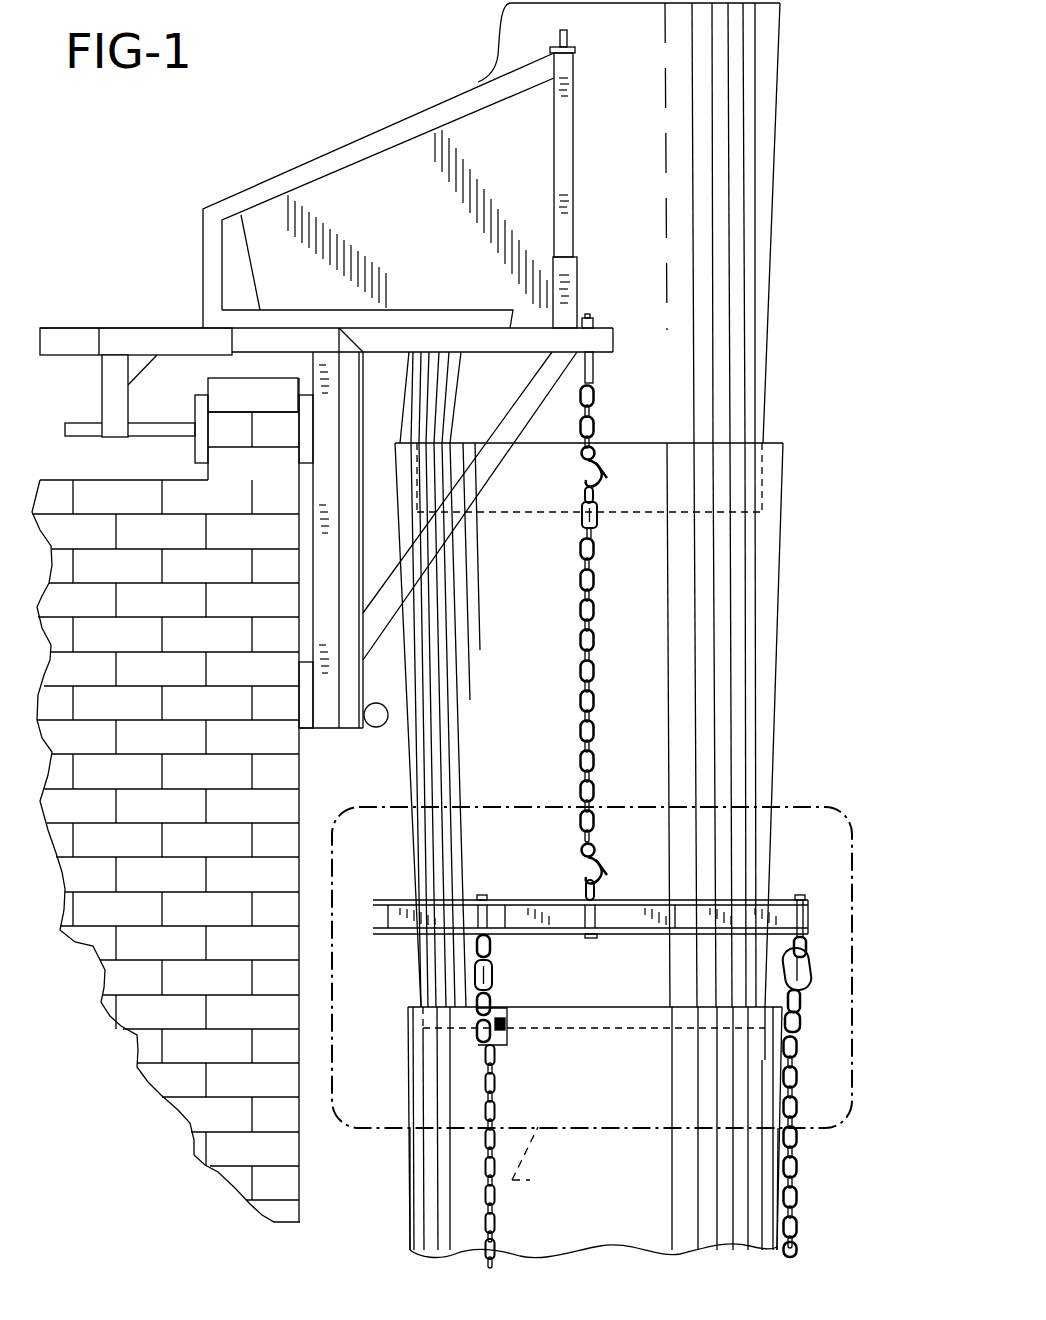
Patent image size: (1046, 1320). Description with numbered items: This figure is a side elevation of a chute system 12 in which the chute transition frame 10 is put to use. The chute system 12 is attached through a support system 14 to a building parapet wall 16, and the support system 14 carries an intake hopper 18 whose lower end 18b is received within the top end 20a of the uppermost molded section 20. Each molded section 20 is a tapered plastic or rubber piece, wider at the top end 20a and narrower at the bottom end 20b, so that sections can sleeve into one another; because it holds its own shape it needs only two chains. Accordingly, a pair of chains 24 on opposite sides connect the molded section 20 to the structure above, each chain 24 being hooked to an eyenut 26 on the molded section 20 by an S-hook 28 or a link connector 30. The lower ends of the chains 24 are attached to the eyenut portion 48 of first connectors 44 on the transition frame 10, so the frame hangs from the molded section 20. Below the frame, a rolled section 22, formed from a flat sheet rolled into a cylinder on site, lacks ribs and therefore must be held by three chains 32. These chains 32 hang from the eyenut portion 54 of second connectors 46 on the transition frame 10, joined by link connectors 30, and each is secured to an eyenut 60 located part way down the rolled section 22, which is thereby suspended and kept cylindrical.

The chute transition frame 10 is at (778, 897).
The chute system 12 is at (795, 376).
The support system 14 is at (605, 322).
The building parapet wall 16 is at (135, 1012).
The intake hopper 18 is at (770, 316).
The lower end of hopper 18b is at (733, 512).
The molded section 20 is at (778, 630).
The top end of molded section 20a is at (776, 443).
The bottom end of molded section 20b is at (640, 1028).
The rolled section 22 is at (405, 1182).
The chain 24 is at (598, 415).
The eyenut 26 is at (585, 494).
The S-hook 28 is at (605, 474).
The link connector 30 is at (497, 977).
The chain 32 is at (502, 1098).
The first connector 44 is at (578, 894).
The second connector 46 is at (488, 890).
The eyenut portion 48 is at (603, 890).
The eyenut portion 54 is at (496, 942).
The eyenut 60 is at (477, 1025).